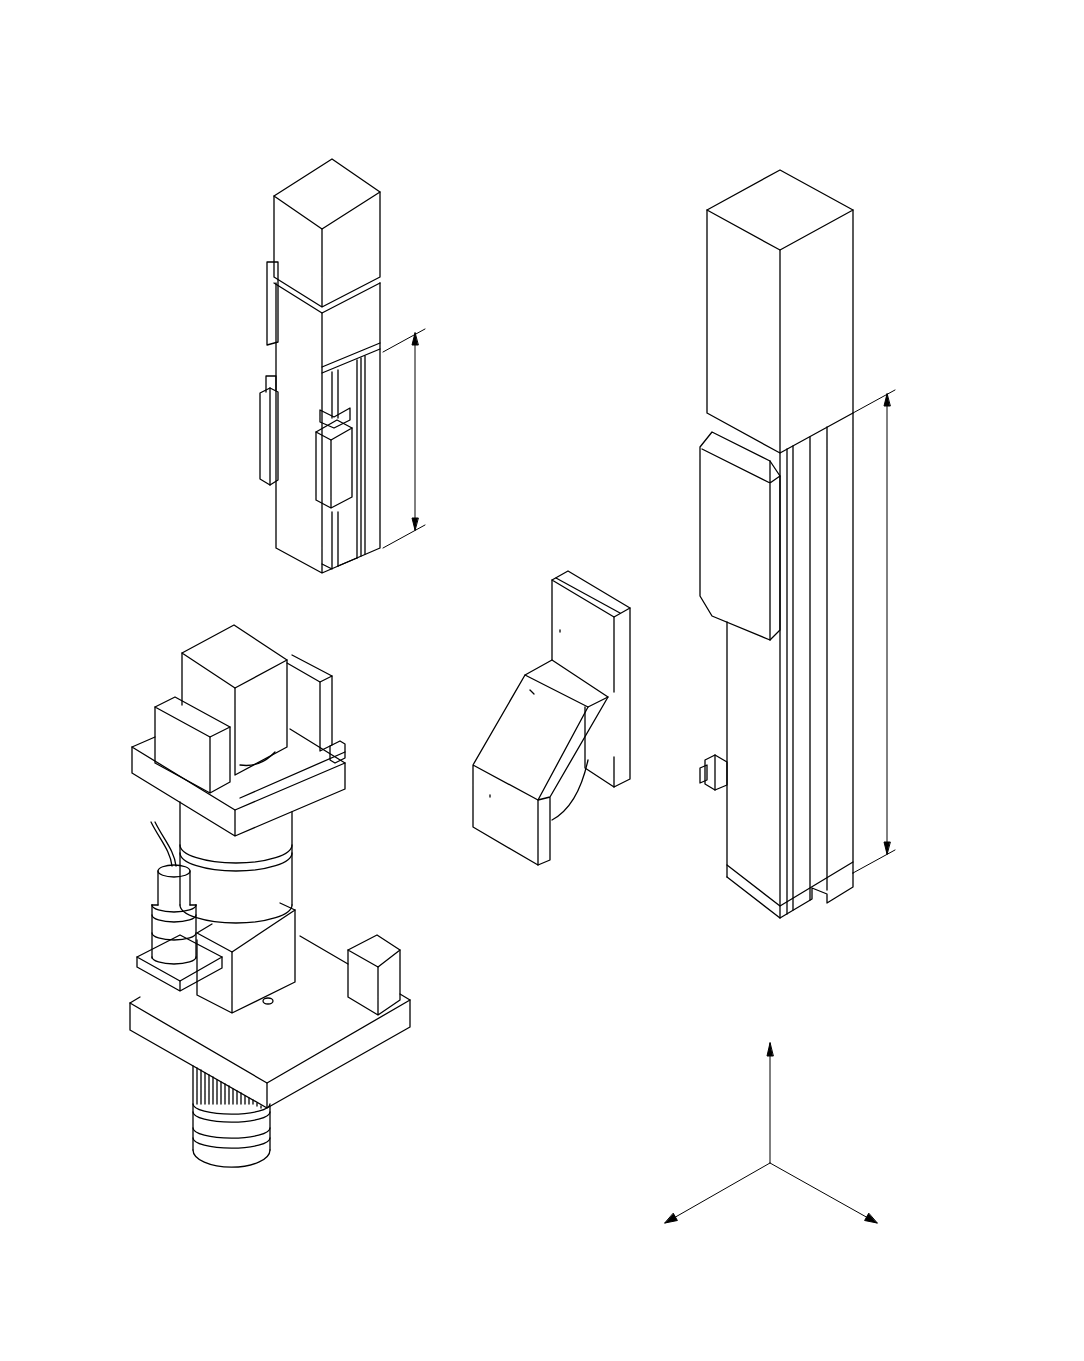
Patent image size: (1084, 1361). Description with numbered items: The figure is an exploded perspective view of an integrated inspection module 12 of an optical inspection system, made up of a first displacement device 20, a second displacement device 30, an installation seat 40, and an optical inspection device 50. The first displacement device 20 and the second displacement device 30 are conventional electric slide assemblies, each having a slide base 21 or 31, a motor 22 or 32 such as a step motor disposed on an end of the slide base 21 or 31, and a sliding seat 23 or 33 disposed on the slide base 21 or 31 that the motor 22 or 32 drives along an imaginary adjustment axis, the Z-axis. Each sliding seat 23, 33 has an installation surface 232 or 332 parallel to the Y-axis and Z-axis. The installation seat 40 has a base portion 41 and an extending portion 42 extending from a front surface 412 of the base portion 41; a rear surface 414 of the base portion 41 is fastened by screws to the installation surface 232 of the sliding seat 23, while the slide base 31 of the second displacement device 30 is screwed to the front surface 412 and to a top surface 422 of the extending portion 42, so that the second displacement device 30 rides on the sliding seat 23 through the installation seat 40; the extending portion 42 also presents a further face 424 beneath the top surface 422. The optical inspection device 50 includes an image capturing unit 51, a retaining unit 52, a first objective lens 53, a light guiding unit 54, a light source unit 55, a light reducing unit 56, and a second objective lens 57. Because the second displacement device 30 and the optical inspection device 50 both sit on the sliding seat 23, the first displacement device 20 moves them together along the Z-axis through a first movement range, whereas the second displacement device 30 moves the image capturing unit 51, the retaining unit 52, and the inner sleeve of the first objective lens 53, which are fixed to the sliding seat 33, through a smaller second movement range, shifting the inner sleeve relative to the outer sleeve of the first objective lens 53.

The integrated inspection module 12 is at (697, 97).
The first displacement device 20 is at (858, 333).
The slide base 21 is at (855, 592).
The motor 22 is at (838, 262).
The sliding seat 23 is at (703, 432).
The installation surface 232 is at (722, 500).
The second displacement device 30 is at (388, 228).
The slide base 31 is at (388, 415).
The motor 32 is at (385, 243).
The sliding seat 33 is at (262, 410).
The installation surface 332 is at (265, 440).
The installation seat 40 is at (463, 582).
The base portion 41 is at (550, 610).
The front surface 412 is at (605, 657).
The rear surface 414 is at (593, 580).
The extending portion 42 is at (505, 692).
The top surface 422 is at (590, 700).
The front surface 424 is at (516, 833).
The optical inspection device 50 is at (211, 622).
The image capturing unit 51 is at (178, 672).
The retaining unit 52 is at (138, 790).
The first objective lens 53 is at (295, 852).
The light guiding unit 54 is at (300, 905).
The light source unit 55 is at (150, 935).
The light reducing unit 56 is at (345, 1070).
The second objective lens 57 is at (192, 1110).